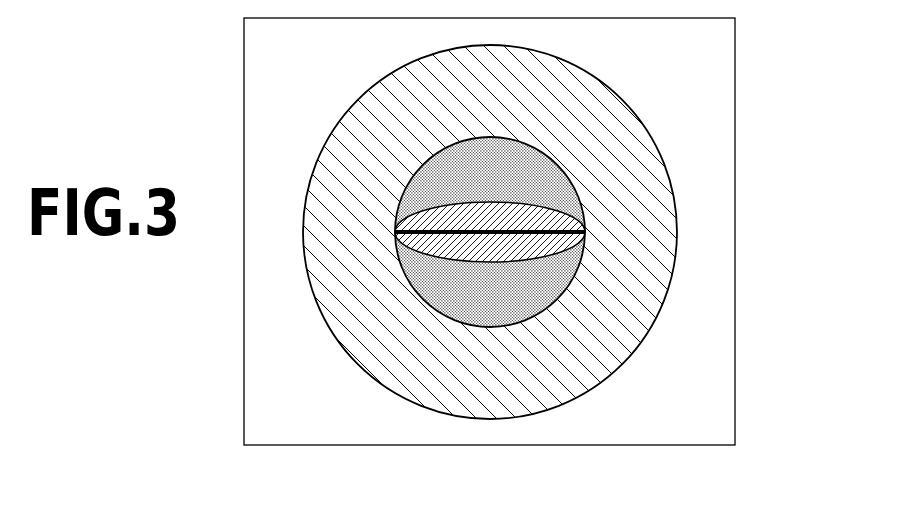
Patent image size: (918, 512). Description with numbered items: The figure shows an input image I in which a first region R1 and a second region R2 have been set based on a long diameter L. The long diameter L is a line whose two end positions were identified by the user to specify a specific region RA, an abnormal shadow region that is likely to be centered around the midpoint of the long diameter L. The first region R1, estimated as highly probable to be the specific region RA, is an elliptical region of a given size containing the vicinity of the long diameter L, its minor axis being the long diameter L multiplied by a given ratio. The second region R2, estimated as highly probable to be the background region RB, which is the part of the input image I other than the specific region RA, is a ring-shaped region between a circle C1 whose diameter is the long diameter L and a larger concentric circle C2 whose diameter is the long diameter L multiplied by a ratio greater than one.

The input image I is at (737, 416).
The background region RB is at (720, 325).
The circle C2 is at (628, 362).
The second region R2 is at (597, 88).
The circle C1 is at (518, 327).
The specific region RA is at (507, 145).
The first region R1 is at (583, 204).
The long diameter L is at (585, 246).